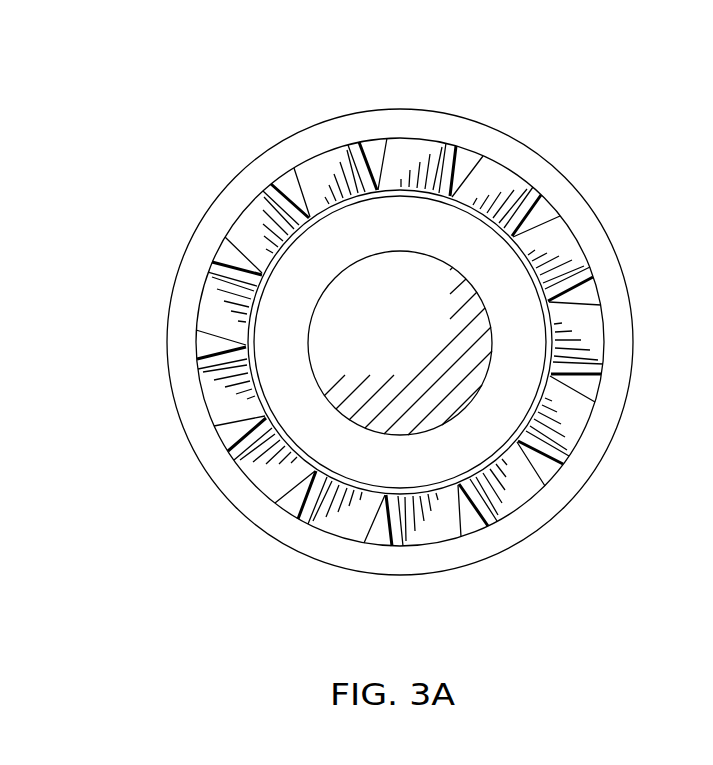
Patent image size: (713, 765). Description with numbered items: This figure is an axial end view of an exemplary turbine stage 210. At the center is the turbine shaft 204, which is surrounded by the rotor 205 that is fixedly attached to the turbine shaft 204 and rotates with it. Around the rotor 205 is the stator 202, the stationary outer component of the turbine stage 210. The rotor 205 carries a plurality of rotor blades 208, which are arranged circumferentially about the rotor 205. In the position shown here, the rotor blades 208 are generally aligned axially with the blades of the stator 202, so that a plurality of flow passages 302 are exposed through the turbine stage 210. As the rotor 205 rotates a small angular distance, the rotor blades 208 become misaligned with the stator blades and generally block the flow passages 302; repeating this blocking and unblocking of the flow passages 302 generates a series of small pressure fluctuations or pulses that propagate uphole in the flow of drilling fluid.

The stator 202 is at (453, 135).
The turbine shaft 204 is at (427, 395).
The rotor 205 is at (513, 377).
The rotor blades 208 is at (187, 397).
The turbine stage 210 is at (180, 168).
The flow passages 302 is at (232, 257).